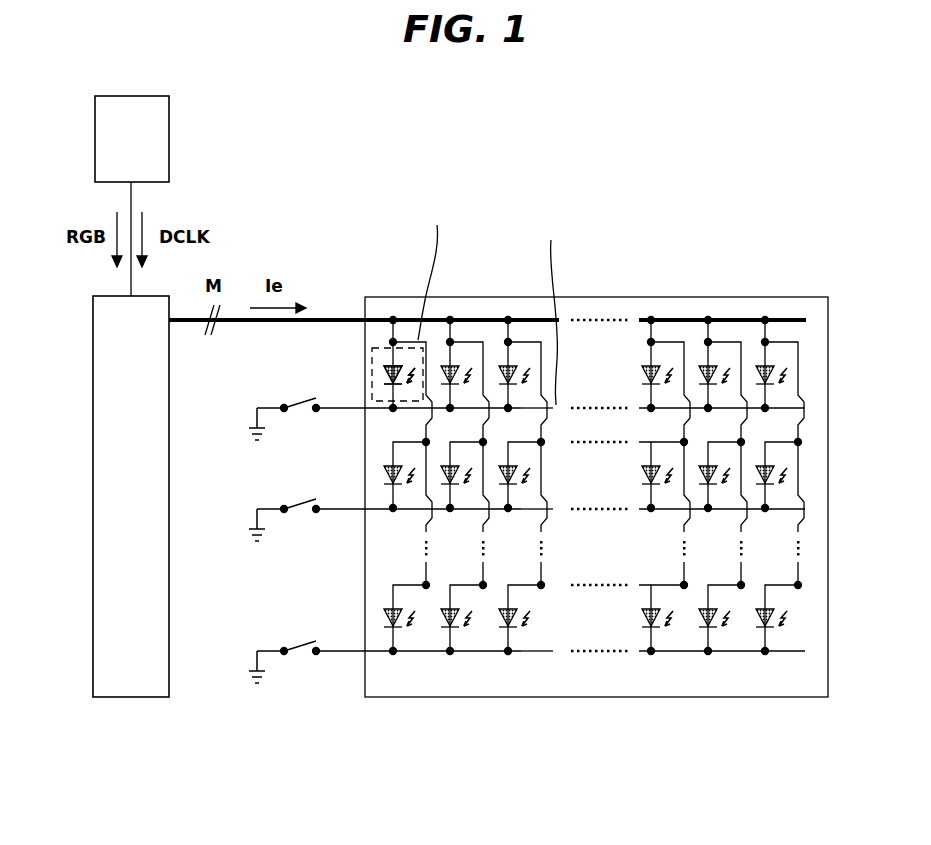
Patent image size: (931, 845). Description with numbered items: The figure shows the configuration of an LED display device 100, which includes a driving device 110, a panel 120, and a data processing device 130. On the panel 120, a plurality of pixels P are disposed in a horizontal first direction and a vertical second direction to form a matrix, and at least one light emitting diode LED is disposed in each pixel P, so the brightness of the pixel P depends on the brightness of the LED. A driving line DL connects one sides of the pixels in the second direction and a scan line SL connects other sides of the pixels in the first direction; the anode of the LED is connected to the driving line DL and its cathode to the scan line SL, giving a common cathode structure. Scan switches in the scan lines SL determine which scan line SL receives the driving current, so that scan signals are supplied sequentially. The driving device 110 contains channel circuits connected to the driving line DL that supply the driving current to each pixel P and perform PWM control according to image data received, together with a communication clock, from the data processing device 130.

The LED display device 100 is at (596, 409).
The driving device 110 is at (140, 697).
The panel 120 is at (803, 297).
The data processing device 130 is at (169, 121).
The pixel P is at (375, 345).
The driving line DL is at (432, 267).
The scan line SL is at (549, 309).
The light emitting diode LED is at (373, 362).